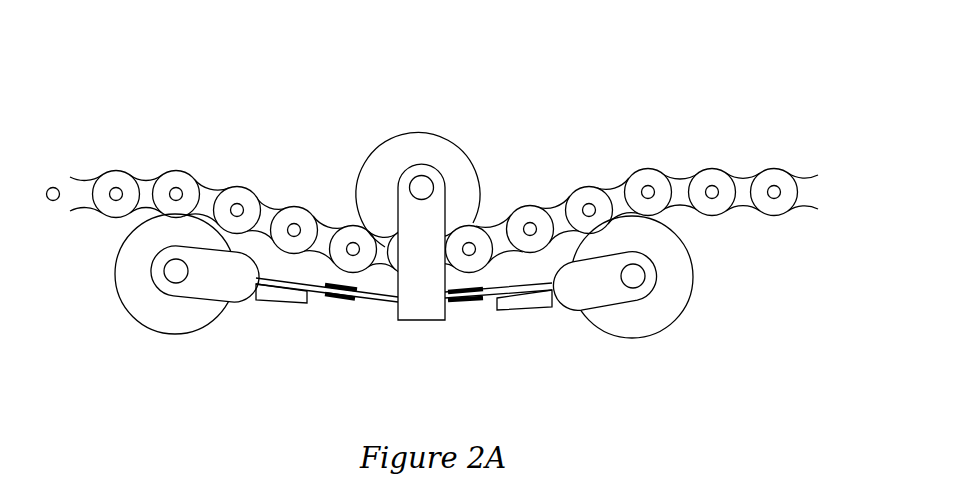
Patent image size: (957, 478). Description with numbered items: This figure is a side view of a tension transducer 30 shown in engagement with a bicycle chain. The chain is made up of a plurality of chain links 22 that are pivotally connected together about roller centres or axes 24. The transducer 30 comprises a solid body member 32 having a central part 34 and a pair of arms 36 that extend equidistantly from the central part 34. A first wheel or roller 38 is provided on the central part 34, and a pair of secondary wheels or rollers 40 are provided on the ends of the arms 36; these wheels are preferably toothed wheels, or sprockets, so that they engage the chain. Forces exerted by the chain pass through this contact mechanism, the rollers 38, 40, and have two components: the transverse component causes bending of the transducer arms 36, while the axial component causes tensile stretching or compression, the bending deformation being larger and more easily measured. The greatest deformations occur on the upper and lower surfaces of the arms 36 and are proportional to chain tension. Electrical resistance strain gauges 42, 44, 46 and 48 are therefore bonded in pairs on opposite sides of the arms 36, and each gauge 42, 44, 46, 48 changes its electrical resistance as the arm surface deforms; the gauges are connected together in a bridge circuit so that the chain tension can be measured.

The chain links 22 is at (443, 196).
The roller centres or axes 24 is at (778, 190).
The transducer device 30 is at (387, 228).
The solid body member 32 is at (404, 300).
The central part 34 is at (433, 283).
The arms 36 is at (508, 288).
The first wheel or roller 38 is at (422, 147).
The secondary wheels or rollers 40 is at (662, 303).
The electrical resistance strain gauge 42 is at (335, 283).
The electrical resistance strain gauge 44 is at (465, 292).
The electrical resistance strain gauge 46 is at (461, 300).
The electrical resistance strain gauge 48 is at (343, 298).